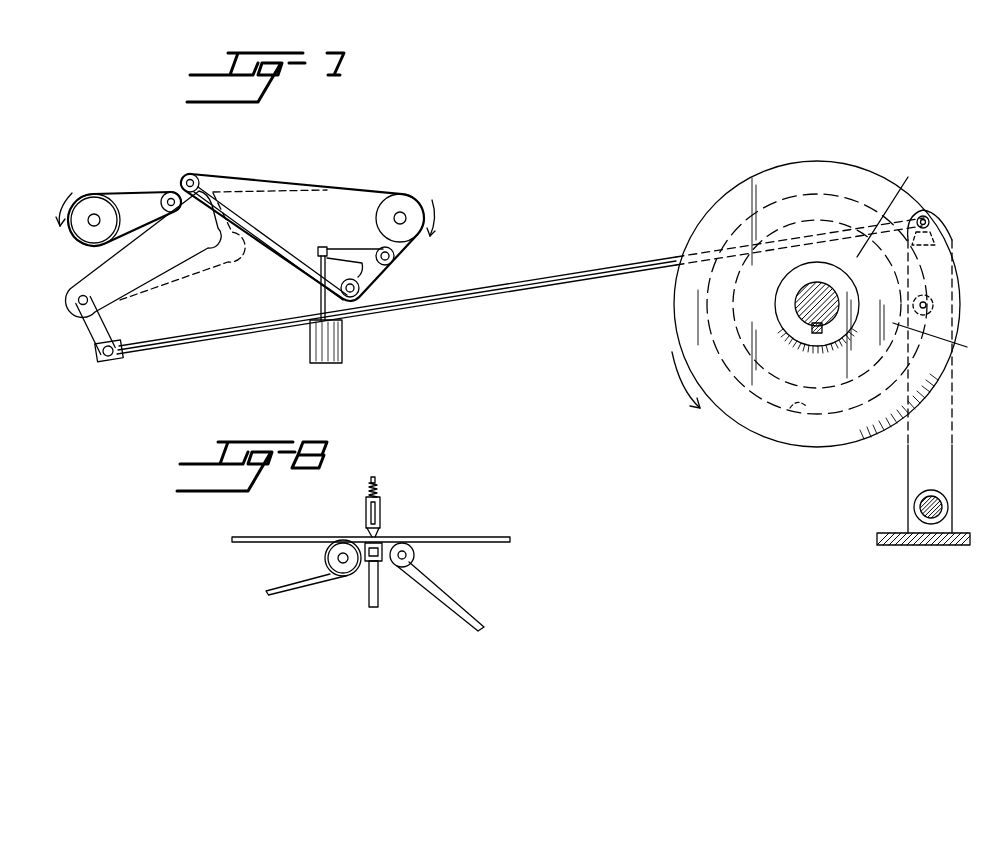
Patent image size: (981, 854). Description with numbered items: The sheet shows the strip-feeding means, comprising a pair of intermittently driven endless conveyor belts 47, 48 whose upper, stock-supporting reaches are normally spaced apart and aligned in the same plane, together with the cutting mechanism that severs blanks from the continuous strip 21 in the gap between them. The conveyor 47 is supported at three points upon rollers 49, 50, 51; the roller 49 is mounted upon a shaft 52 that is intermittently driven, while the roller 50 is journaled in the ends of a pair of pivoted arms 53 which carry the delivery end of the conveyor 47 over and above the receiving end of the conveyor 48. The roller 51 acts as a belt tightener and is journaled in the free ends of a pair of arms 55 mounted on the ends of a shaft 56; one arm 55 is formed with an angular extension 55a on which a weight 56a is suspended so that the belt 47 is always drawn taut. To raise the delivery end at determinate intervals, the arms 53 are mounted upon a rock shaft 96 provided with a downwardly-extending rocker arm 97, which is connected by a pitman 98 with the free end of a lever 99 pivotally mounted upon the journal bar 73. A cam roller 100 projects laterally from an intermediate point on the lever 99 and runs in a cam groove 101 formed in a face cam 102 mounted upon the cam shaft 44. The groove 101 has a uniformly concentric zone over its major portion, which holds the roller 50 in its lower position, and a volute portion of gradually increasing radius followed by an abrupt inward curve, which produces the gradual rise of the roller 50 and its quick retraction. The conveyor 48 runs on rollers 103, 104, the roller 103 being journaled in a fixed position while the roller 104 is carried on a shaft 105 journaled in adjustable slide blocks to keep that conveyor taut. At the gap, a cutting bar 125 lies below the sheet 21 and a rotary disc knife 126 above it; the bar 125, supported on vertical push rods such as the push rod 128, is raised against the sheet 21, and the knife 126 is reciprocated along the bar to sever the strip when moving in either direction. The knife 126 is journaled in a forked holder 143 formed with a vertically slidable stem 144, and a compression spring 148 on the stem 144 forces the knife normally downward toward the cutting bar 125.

In FIG. 8, the continuous strip 21 is at (474, 537).
In FIG. 7, the cam shaft 44 is at (803, 297).
In FIG. 7, the conveyor belt 47 is at (271, 250).
In FIG. 8, the conveyor belt 47 is at (470, 613).
In FIG. 7, the conveyor belt 48 is at (117, 192).
In FIG. 8, the conveyor belt 48 is at (280, 590).
In FIG. 7, the roller 49 is at (420, 232).
In FIG. 7, the roller 50 is at (189, 172).
In FIG. 8, the roller 50 is at (414, 555).
In FIG. 7, the roller 51 is at (326, 290).
In FIG. 7, the shaft 52 is at (395, 217).
In FIG. 7, the pivoted arm 53 is at (180, 247).
In FIG. 7, the arm 55 is at (372, 287).
In FIG. 7, the angular extension 55a is at (358, 250).
In FIG. 7, the shaft 56 is at (395, 257).
In FIG. 7, the weight 56a is at (333, 352).
In FIG. 7, the journal bar 73 is at (917, 507).
In FIG. 7, the rock shaft 96 is at (72, 302).
In FIG. 7, the rocker arm 97 is at (87, 322).
In FIG. 7, the pitman 98 is at (528, 289).
In FIG. 7, the lever 99 is at (915, 448).
In FIG. 7, the cam roller 100 is at (914, 305).
In FIG. 7, the cam groove 101 is at (800, 418).
In FIG. 7, the face cam 102 is at (745, 417).
In FIG. 7, the roller 103 is at (160, 203).
In FIG. 8, the roller 103 is at (341, 574).
In FIG. 7, the roller 104 is at (78, 220).
In FIG. 7, the shaft 105 is at (90, 223).
In FIG. 8, the cutting bar 125 is at (383, 541).
In FIG. 8, the rotary disc knife 126 is at (380, 534).
In FIG. 8, the push rod 128 is at (379, 598).
In FIG. 8, the forked holder 143 is at (365, 507).
In FIG. 8, the stem 144 is at (373, 481).
In FIG. 8, the compression spring 148 is at (367, 490).